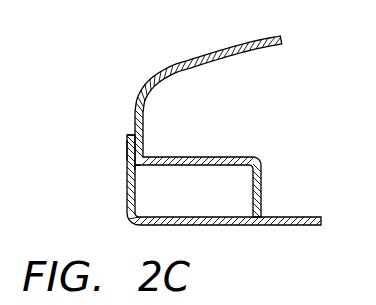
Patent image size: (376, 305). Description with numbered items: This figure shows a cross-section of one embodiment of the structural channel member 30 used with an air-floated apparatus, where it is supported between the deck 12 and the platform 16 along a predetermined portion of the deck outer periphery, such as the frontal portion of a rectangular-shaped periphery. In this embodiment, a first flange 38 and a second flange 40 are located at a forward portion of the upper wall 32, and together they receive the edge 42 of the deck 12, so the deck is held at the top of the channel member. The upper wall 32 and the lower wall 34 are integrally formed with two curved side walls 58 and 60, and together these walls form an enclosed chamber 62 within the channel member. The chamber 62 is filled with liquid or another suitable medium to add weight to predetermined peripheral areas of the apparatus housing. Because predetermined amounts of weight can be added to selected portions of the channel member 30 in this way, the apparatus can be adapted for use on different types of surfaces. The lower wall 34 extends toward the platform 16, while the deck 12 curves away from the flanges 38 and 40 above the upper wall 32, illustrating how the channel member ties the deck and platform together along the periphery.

The deck 12 is at (215, 51).
The platform 16 is at (296, 226).
The structural channel member 30 is at (105, 122).
The upper wall 32 is at (220, 157).
The lower wall 34 is at (208, 225).
The first flange 38 is at (127, 144).
The second flange 40 is at (144, 152).
The edge of the deck 42 is at (138, 165).
The curved side wall 58 is at (128, 196).
The curved side wall 60 is at (262, 184).
The enclosed chamber 62 is at (235, 201).